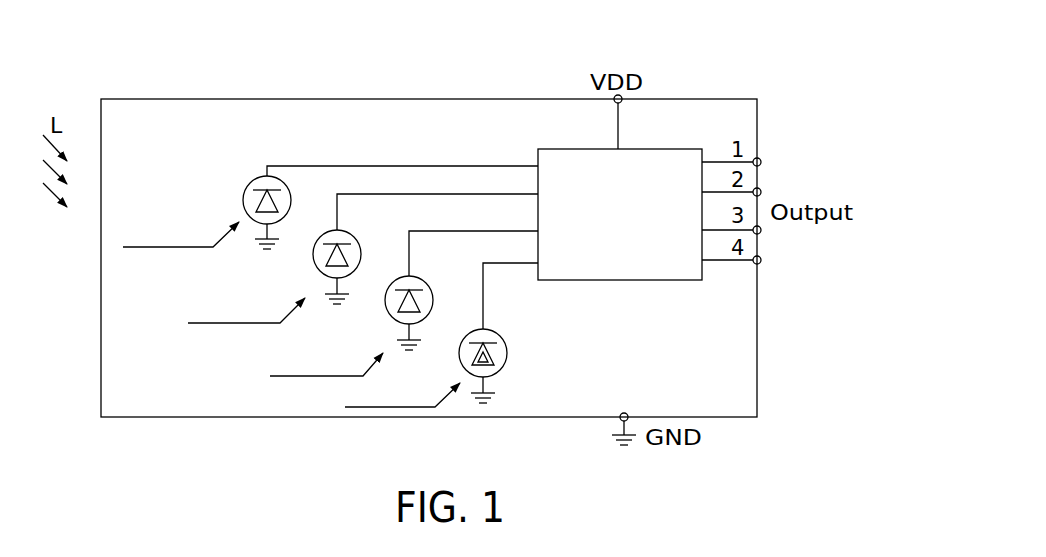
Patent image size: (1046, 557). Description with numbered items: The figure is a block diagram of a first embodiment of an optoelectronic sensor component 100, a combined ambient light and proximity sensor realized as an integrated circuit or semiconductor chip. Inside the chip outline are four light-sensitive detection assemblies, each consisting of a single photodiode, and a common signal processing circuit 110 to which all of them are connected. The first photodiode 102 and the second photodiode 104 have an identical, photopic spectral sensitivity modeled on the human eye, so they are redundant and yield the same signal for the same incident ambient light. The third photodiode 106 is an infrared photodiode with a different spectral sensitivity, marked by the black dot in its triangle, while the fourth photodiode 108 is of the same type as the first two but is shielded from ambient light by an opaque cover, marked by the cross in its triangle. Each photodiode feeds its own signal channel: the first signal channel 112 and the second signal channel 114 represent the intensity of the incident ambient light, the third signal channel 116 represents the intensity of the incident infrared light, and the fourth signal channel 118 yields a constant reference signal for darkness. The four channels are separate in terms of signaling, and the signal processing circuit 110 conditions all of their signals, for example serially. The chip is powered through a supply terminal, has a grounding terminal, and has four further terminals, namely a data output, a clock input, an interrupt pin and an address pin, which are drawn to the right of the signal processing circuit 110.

The sensor component 100 is at (422, 75).
The first photodiode 102 is at (254, 162).
The second photodiode 104 is at (363, 234).
The third photodiode 106 is at (436, 272).
The fourth photodiode 108 is at (518, 350).
The signal processing circuit 110 is at (661, 294).
The first signal channel 112 is at (402, 165).
The second signal channel 114 is at (513, 193).
The third signal channel 116 is at (457, 230).
The fourth signal channel 118 is at (485, 310).